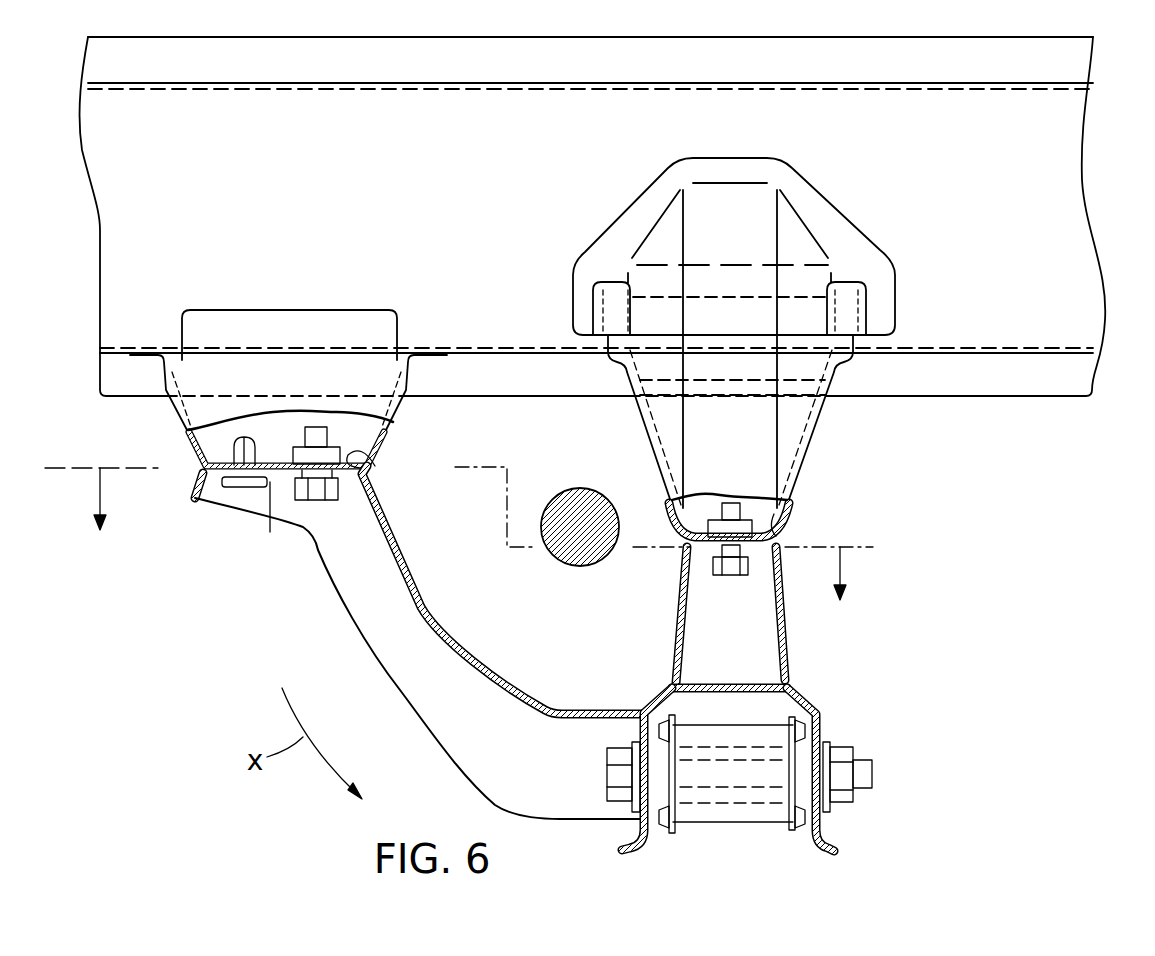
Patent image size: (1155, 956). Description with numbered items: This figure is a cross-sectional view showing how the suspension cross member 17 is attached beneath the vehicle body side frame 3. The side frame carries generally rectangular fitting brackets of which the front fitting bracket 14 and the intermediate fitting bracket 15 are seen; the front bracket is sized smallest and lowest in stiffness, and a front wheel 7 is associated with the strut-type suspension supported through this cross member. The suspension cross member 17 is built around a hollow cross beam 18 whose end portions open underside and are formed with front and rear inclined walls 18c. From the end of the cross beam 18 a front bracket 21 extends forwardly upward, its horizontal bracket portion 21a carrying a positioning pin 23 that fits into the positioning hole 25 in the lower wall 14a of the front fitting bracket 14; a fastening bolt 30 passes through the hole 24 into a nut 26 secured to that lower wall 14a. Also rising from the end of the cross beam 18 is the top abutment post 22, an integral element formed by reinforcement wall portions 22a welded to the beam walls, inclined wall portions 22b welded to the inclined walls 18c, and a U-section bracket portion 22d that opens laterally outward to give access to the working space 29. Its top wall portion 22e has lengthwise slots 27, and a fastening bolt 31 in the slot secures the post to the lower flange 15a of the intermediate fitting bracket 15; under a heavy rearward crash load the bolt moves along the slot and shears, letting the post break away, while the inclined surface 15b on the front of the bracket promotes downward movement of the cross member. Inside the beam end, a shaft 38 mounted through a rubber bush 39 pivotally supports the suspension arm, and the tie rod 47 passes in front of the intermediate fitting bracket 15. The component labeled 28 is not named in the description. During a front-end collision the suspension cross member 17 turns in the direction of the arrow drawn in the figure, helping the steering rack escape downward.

The vehicle body side frame 3 is at (1053, 328).
The front fitting bracket 14 is at (397, 420).
The lower wall of front fitting bracket 14a is at (382, 454).
The intermediate fitting bracket 15 is at (807, 458).
The lower flange of intermediate fitting bracket 15a is at (788, 523).
The inclined surface 15b is at (643, 433).
The suspension cross member 17 is at (935, 580).
The cross beam 18 is at (760, 665).
The inclined walls 18c is at (652, 700).
The front bracket 21 is at (476, 650).
The bracket portion 21a is at (268, 532).
The top abutment post 22 is at (660, 622).
The reinforcement wall portions 22a is at (632, 727).
The inclined wall portions 22b is at (668, 688).
The bracket portion 22d is at (672, 600).
The top wall portion 22e is at (745, 571).
The positioning pin 23 is at (232, 447).
The hole 24 is at (313, 502).
The positioning hole 25 is at (258, 462).
The nut 26 is at (342, 447).
The slot 27 is at (716, 576).
The bolt 28 is at (698, 527).
The working space 29 is at (714, 679).
The fastening bolt 30 is at (333, 502).
The fastening bolt 31 is at (728, 578).
The shaft 38 is at (758, 805).
The rubber bush 39 is at (800, 843).
The tie rod 47 is at (578, 490).
The front wheel 7 is at (447, 552).